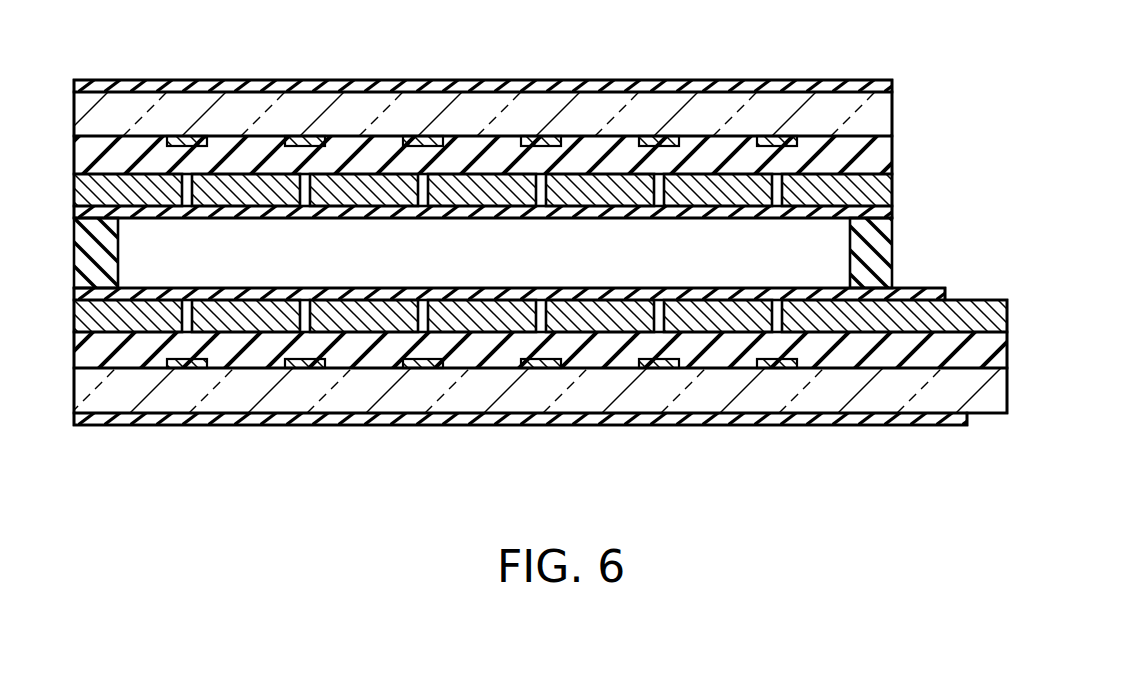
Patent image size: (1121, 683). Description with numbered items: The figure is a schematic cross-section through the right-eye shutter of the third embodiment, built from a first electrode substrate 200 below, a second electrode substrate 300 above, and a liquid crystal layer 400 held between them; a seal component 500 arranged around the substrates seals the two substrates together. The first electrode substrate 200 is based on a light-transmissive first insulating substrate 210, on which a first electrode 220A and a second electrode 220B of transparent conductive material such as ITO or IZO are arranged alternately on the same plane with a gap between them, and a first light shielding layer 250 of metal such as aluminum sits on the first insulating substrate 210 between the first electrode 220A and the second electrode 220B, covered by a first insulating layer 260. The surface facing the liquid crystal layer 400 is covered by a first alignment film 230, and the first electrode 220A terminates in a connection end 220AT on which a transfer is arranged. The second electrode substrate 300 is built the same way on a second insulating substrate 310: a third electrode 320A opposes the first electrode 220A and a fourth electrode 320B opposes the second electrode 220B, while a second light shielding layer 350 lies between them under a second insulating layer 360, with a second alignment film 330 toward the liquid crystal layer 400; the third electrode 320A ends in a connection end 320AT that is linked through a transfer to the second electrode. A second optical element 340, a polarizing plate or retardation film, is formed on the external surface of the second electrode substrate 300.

The first electrode substrate 200 is at (1013, 362).
The first insulating substrate 210 is at (998, 405).
The first electrode 220A is at (118, 318).
The second electrode 220B is at (238, 318).
The connection end of the first electrode 220AT is at (855, 318).
The first alignment film 230 is at (945, 293).
The first light shielding layer 250 is at (186, 364).
The first insulating layer 260 is at (998, 345).
The second electrode substrate 300 is at (903, 132).
The second insulating substrate 310 is at (883, 108).
The third electrode 320A is at (132, 185).
The fourth electrode 320B is at (251, 185).
The connection end of the third electrode 320AT is at (836, 185).
The second alignment film 330 is at (892, 211).
The second optical element 340 is at (892, 84).
The second light shielding layer 350 is at (187, 140).
The second insulating layer 360 is at (883, 162).
The liquid crystal layer 400 is at (838, 270).
The seal component 500 is at (883, 245).